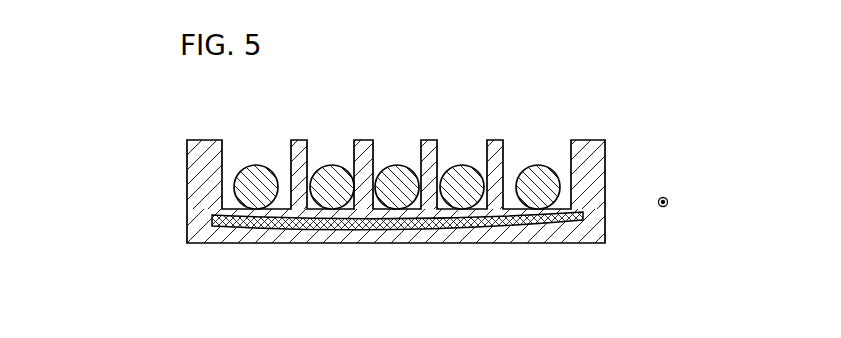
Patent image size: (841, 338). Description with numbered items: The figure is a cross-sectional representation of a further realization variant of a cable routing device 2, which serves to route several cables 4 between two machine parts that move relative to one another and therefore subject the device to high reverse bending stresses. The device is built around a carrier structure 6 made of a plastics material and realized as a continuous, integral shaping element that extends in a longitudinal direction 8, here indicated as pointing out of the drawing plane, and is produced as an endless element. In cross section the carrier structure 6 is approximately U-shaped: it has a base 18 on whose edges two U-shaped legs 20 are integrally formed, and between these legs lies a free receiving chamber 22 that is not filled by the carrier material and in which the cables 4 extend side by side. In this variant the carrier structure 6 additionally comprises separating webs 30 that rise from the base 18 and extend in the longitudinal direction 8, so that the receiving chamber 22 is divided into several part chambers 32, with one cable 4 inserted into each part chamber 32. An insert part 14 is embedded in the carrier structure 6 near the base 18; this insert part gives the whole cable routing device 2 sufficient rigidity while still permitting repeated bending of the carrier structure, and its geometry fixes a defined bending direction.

The cable routing device 2 is at (718, 165).
The cable 4 is at (535, 167).
The carrier structure 6 is at (598, 202).
The longitudinal direction 8 is at (667, 207).
The insert part 14 is at (418, 229).
The base 18 is at (260, 238).
The U-shaped leg 20 is at (188, 193).
The receiving chamber 22 is at (247, 158).
The separating web 30 is at (361, 150).
The part chamber 32 is at (463, 153).